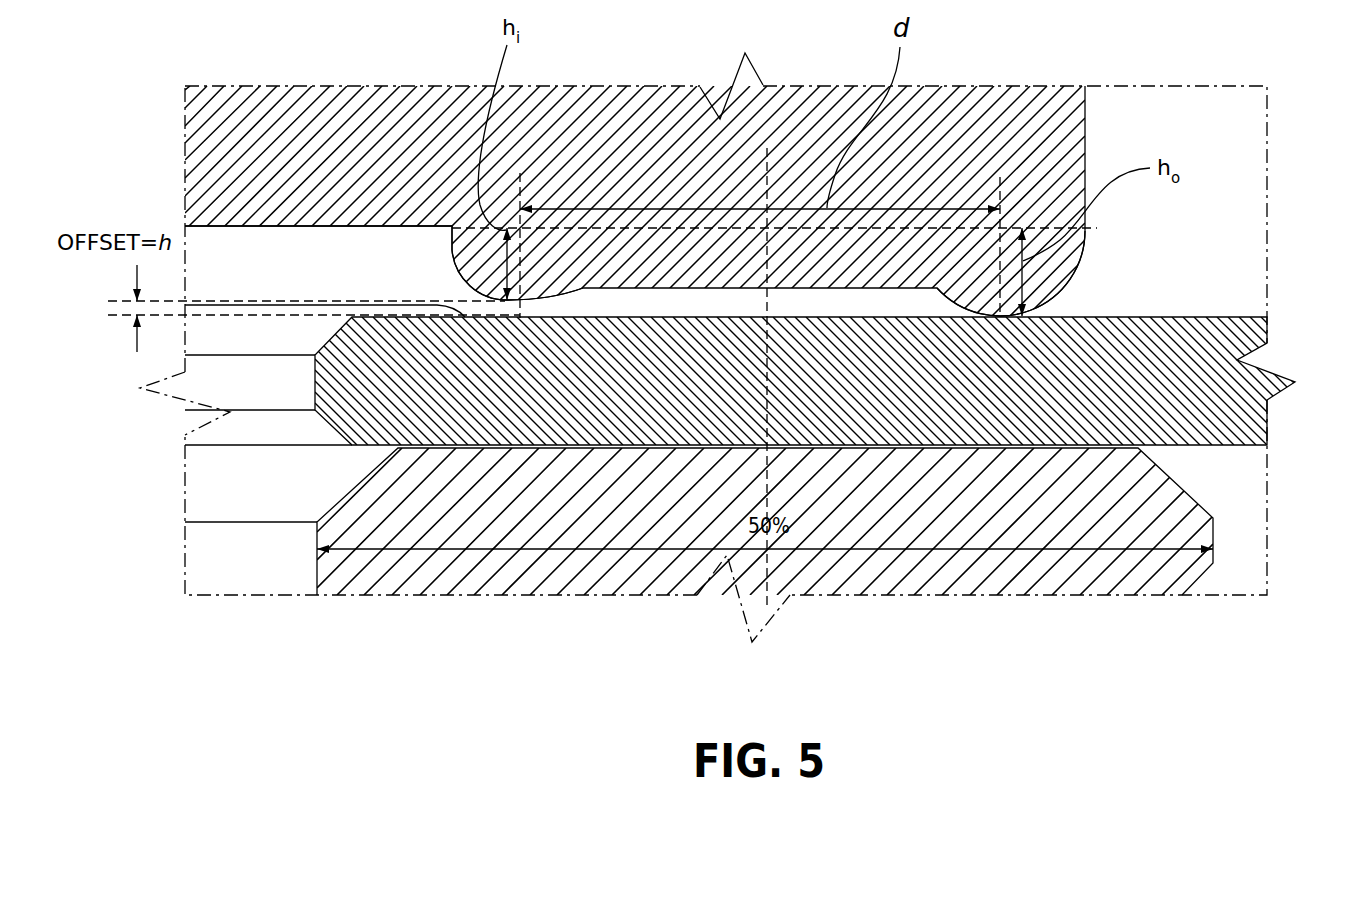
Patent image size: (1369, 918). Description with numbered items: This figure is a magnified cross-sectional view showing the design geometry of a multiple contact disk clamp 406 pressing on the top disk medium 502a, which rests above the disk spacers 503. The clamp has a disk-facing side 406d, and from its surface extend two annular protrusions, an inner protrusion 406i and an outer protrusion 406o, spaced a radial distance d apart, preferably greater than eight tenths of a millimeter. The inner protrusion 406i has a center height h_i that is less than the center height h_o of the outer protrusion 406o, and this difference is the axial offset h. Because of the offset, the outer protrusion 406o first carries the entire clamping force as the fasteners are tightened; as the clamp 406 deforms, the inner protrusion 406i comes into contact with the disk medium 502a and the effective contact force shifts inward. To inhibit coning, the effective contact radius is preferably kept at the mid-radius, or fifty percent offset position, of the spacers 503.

The disk clamp 406 is at (326, 113).
The disk-facing side 406d is at (299, 232).
The inner protrusion 406i is at (477, 255).
The outer protrusion 406o is at (1052, 267).
The top disk medium 502a is at (1235, 338).
The disk spacers 503 is at (1105, 578).